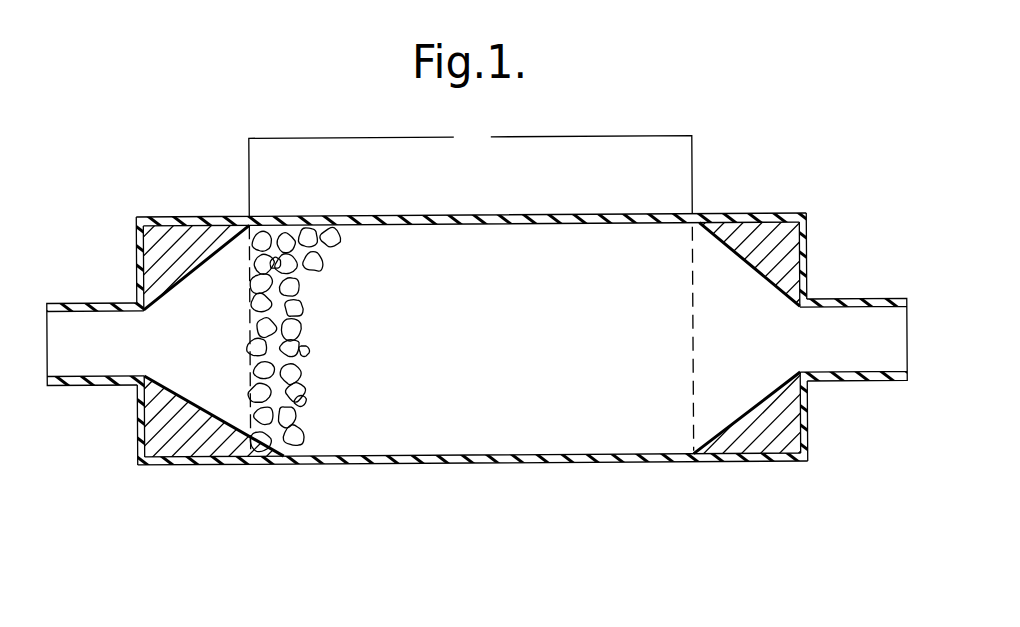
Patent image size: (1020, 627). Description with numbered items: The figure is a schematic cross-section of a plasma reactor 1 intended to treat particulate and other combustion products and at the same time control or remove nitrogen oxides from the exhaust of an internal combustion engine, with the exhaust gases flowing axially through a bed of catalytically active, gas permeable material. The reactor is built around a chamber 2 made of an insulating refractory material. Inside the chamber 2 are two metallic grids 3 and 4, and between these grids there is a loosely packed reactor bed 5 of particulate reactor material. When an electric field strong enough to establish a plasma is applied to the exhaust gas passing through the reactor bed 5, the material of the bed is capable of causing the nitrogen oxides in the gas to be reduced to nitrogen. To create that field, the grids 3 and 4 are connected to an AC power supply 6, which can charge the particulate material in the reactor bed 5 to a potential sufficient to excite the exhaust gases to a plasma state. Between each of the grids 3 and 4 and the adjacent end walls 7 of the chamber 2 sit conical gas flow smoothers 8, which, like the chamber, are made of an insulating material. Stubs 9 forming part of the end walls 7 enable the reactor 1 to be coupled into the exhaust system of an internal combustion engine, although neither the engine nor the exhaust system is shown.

The plasma reactor 1 is at (510, 302).
The chamber 2 is at (623, 464).
The metallic grid 3 is at (248, 336).
The metallic grid 4 is at (695, 335).
The reactor bed 5 is at (298, 261).
The AC power supply 6 is at (477, 123).
The end wall 7 is at (140, 428).
The conical gas flow smoother 8 is at (198, 421).
The stub 9 is at (90, 300).